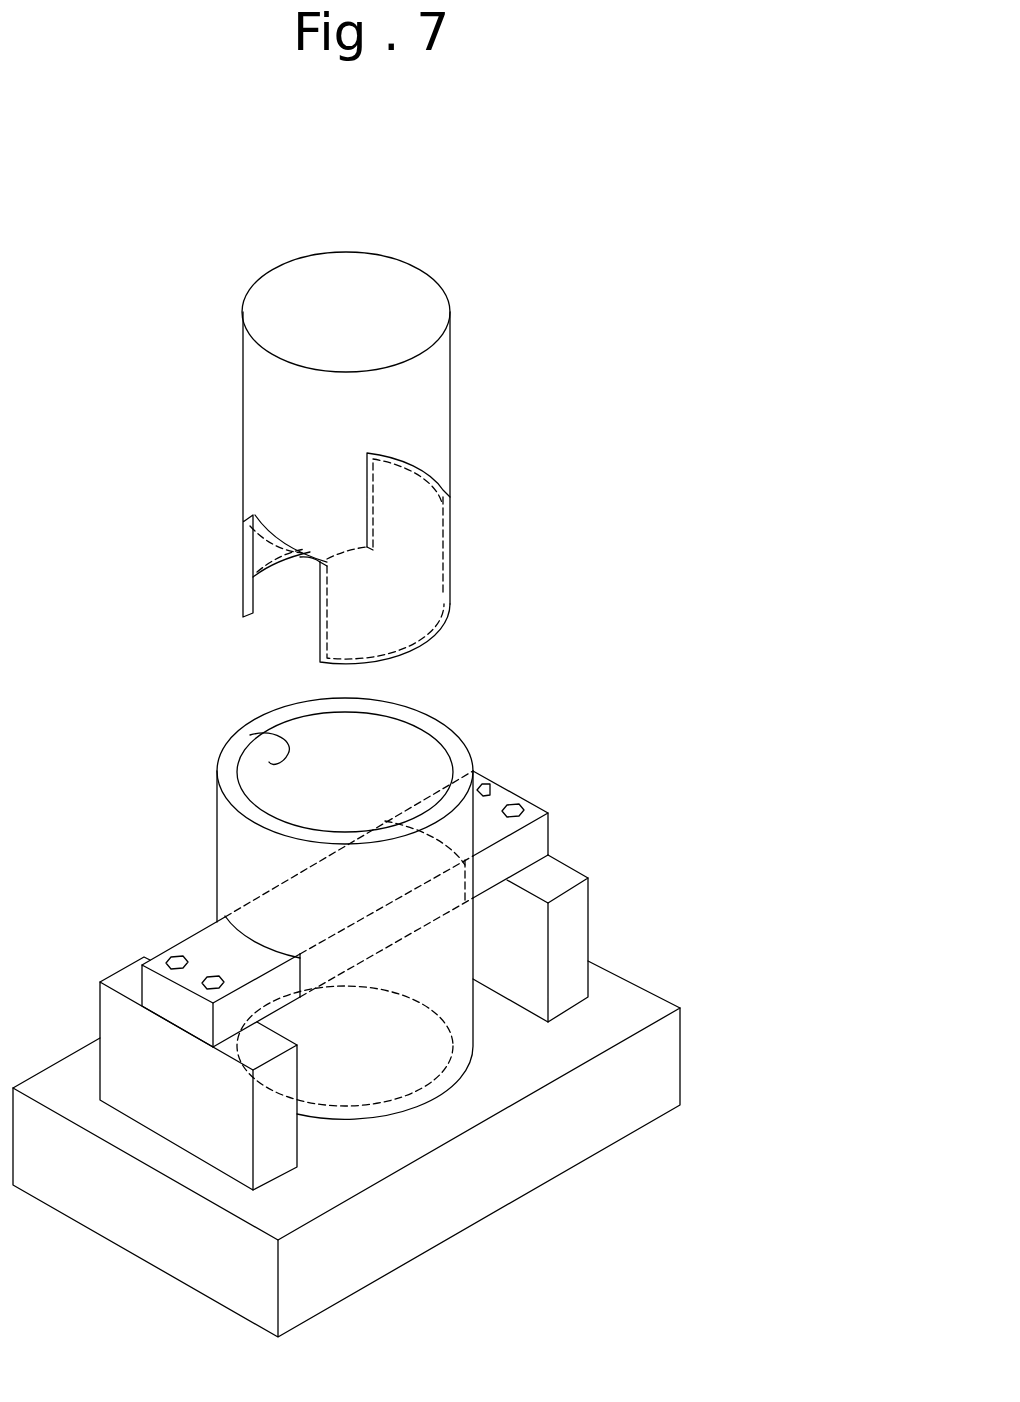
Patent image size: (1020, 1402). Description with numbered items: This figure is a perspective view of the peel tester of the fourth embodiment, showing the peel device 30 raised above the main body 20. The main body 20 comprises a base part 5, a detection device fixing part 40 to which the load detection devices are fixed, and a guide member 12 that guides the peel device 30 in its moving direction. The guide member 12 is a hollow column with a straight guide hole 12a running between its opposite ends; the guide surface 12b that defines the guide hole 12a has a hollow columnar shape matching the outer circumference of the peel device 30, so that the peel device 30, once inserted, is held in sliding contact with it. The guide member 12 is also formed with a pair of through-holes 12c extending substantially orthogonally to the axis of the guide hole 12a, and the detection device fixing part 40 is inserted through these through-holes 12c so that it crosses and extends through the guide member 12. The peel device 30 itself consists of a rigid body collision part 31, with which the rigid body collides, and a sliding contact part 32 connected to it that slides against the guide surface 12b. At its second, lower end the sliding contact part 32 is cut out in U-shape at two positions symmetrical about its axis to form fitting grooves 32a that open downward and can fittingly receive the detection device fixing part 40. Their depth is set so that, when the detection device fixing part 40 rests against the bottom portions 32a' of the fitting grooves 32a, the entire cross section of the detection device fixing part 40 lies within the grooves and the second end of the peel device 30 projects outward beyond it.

The base part 5 is at (603, 944).
The guide member 12 is at (462, 757).
The guide hole 12a is at (382, 755).
The guide surface 12b is at (250, 735).
The through-holes 12c is at (463, 862).
The main body 20 is at (677, 761).
The peel device 30 is at (498, 194).
The rigid body collision part 31 is at (355, 290).
The sliding contact part 32 is at (451, 386).
The fitting grooves 32a is at (223, 554).
The bottom portions 32a' is at (221, 539).
The detection device fixing part 40 is at (501, 798).